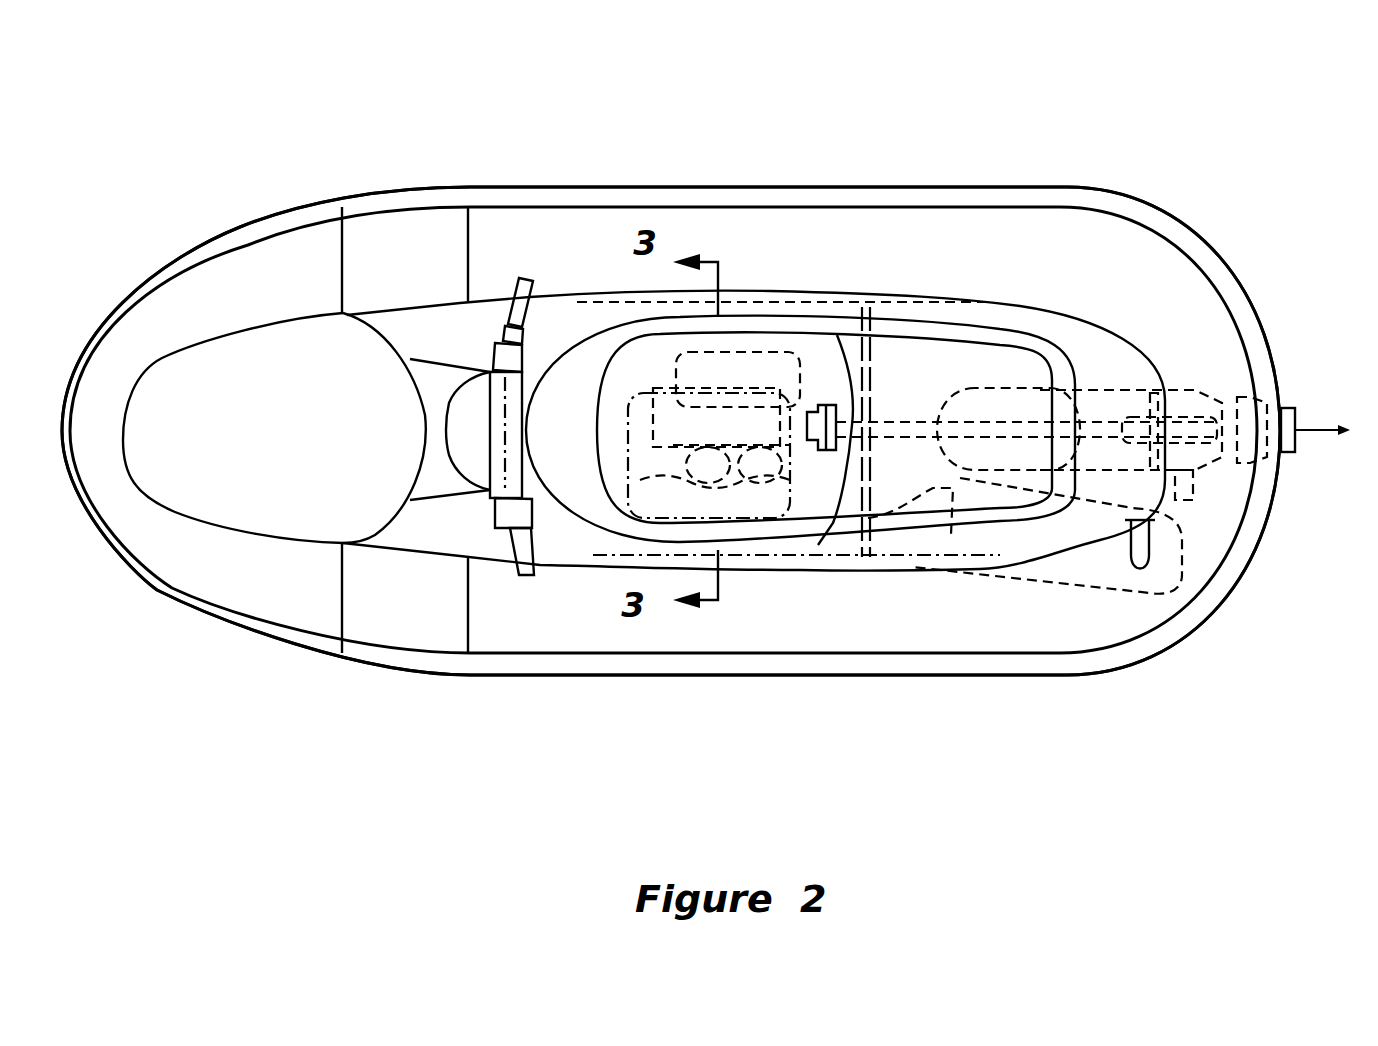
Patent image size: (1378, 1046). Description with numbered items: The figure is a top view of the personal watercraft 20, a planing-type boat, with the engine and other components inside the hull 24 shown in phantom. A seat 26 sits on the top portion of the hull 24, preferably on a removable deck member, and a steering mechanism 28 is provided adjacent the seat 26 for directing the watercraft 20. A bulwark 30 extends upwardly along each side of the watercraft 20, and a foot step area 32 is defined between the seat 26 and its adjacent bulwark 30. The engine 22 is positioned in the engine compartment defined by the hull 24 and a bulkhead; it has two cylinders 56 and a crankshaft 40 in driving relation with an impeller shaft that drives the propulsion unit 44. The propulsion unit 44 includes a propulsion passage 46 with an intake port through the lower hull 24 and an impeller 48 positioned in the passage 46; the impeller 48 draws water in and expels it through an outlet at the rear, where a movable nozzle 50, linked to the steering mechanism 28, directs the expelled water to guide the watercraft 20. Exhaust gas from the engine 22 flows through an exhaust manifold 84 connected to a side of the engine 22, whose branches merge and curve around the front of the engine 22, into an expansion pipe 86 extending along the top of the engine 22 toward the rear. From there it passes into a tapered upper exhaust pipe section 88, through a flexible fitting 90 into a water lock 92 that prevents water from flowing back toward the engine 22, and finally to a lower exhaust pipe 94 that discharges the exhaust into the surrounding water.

The personal watercraft 20 is at (1122, 122).
The engine 22 is at (654, 390).
The hull 24 is at (320, 660).
The seat 26 is at (1006, 312).
The steering mechanism 28 is at (513, 277).
The bulwark 30 is at (678, 201).
The foot step area 32 is at (817, 225).
The crankshaft 40 is at (815, 403).
The propulsion unit 44 is at (904, 360).
The propulsion passage 46 is at (1097, 374).
The impeller 48 is at (1122, 414).
The nozzle 50 is at (1287, 408).
The cylinders 56 is at (790, 520).
The exhaust manifold 84 is at (742, 518).
The expansion pipe 86 is at (743, 376).
The upper exhaust pipe section 88 is at (850, 560).
The flexible fitting 90 is at (923, 568).
The water lock 92 is at (1040, 582).
The lower exhaust pipe 94 is at (1177, 567).